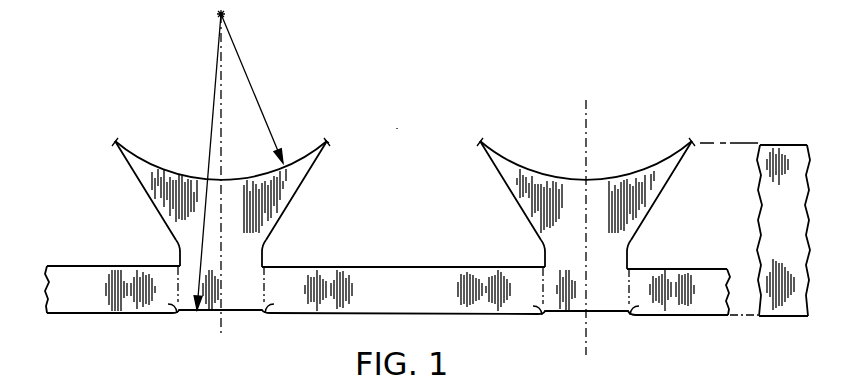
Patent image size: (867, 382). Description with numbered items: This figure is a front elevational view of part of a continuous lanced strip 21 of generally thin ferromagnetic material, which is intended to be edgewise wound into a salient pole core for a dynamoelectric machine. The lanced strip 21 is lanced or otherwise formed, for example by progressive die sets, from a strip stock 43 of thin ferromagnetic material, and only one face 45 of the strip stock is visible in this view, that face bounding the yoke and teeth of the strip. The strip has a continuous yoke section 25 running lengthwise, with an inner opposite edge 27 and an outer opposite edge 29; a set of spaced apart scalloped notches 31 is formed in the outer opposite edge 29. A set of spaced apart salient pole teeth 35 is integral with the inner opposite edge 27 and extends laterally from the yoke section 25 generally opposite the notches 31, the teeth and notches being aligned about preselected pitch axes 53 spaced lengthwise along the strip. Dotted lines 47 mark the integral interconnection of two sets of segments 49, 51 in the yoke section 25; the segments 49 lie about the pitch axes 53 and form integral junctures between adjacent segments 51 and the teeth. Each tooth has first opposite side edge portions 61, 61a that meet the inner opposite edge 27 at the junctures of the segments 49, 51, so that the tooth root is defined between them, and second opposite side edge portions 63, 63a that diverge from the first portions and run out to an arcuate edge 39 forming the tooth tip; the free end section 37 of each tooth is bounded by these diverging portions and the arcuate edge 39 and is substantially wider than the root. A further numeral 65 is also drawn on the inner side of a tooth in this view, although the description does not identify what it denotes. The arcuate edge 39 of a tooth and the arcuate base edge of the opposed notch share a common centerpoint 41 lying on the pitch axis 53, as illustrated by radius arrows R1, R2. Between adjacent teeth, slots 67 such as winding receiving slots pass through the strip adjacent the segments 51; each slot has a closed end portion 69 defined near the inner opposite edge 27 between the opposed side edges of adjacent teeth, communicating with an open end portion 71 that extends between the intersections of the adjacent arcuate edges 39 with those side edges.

The lanced strip 21 is at (716, 141).
The yoke section 25 is at (72, 280).
The opposite edge 27 is at (58, 266).
The opposite edge 29 is at (67, 314).
The notches 31 is at (241, 312).
The salient pole teeth 35 is at (151, 198).
The free end sections 37 is at (137, 164).
The arcuate edge 39 is at (145, 159).
The centerpoint 41 is at (219, 14).
The strip stock 43 is at (795, 219).
The face 45 is at (759, 232).
The dotted lines 47 is at (178, 306).
The segments 49 is at (255, 297).
The segments 51 is at (105, 302).
The pitch axes 53 is at (222, 153).
The first opposite side edge portion 61 is at (177, 250).
The first opposite side edge portion 61a is at (268, 252).
The second opposite side edge portion 63 is at (112, 152).
The second opposite side edge portion 63a is at (320, 164).
The inner side surface of fin 65 is at (296, 195).
The slots 67 is at (397, 128).
The closed end portion 69 is at (393, 267).
The open end portion 71 is at (328, 142).
The radius arrow R1 is at (241, 60).
The radius arrow R2 is at (214, 70).